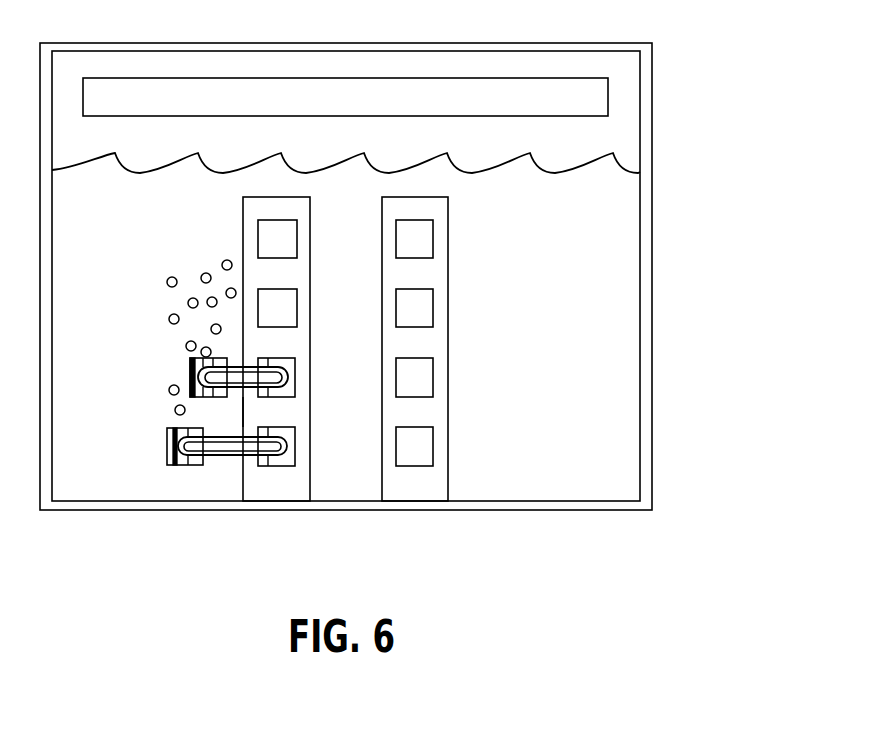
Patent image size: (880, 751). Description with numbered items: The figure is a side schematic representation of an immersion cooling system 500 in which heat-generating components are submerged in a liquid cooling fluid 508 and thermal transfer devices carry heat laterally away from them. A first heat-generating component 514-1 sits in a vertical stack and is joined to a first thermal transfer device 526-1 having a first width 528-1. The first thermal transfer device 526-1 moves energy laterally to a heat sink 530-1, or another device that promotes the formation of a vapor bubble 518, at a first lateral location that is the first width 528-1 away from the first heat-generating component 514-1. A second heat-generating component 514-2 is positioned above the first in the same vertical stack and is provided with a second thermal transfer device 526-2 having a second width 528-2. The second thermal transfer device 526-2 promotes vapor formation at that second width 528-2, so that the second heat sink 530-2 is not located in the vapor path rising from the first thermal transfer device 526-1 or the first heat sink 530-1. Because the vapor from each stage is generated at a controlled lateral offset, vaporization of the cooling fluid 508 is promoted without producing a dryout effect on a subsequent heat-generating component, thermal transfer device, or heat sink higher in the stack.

The electronic device assembly 500 is at (680, 73).
The cooling fluid 508 is at (128, 272).
The vapor bubble 518 is at (175, 410).
The first heat-generating component 514-1 is at (288, 457).
The second heat-generating component 514-2 is at (297, 363).
The first thermal transfer device 526-1 is at (288, 446).
The second thermal transfer device 526-2 is at (288, 378).
The first width 528-1 is at (286, 477).
The second width 528-2 is at (197, 410).
The heat sink 530-1 is at (167, 448).
The second heat sink 530-2 is at (190, 374).